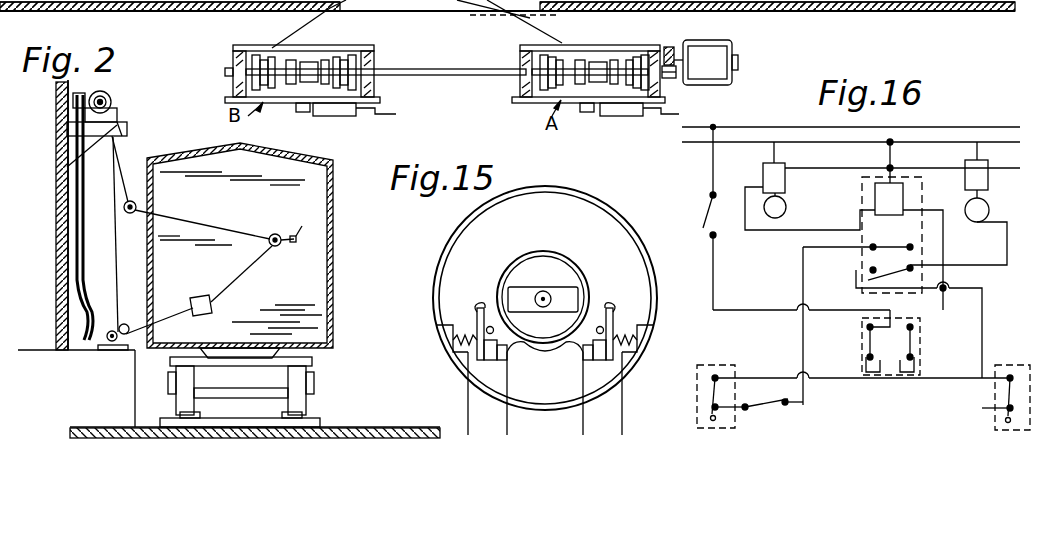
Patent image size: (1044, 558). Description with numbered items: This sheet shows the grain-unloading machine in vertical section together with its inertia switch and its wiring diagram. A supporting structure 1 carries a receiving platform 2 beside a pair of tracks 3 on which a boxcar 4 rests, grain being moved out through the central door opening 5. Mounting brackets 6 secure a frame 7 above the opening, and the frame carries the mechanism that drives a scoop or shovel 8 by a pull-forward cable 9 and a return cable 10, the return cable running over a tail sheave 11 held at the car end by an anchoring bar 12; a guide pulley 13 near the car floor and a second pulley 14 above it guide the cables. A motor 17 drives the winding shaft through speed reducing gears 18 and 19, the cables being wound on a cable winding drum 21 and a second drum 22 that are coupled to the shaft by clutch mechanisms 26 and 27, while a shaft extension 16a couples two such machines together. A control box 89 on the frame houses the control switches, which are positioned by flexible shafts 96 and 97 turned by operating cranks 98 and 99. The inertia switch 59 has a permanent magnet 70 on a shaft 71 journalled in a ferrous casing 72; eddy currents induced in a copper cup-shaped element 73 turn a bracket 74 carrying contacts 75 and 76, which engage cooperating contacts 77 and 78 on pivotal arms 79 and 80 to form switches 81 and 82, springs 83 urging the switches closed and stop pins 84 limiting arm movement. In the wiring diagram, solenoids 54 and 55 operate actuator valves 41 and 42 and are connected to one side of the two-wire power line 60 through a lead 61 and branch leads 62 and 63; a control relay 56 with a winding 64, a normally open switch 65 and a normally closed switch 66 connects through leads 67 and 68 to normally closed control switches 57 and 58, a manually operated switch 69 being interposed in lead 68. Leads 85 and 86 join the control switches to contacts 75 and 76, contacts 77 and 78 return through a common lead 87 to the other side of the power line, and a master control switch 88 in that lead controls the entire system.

In FIG. 2, the supporting structure 1 is at (62, 203).
In FIG. 2, the receiving platform 2 is at (727, 12).
In FIG. 2, the tracks 3 is at (198, 418).
In FIG. 2, the boxcar 4 is at (336, 290).
In FIG. 2, the opening 5 is at (154, 268).
In FIG. 2, the mounting bracket 6 is at (67, 137).
In FIG. 2, the frame 7 is at (120, 118).
In FIG. 2, the scoop or shovel 8 is at (212, 308).
In FIG. 2, the pull-forward cable 9 is at (114, 247).
In FIG. 2, the return cable 10 is at (210, 236).
In FIG. 2, the tail sheave 11 is at (275, 234).
In FIG. 2, the anchoring bar 12 is at (296, 238).
In FIG. 2, the guide pulley 13 is at (148, 320).
In FIG. 2, the second pulley 14 is at (138, 206).
In FIG. 2, the shaft extension 16a is at (438, 76).
In FIG. 2, the motor 17 is at (732, 50).
In FIG. 2, the speed reducing gear 18 is at (668, 47).
In FIG. 2, the speed reducing gear 19 is at (673, 78).
In FIG. 2, the cable winding drum 21 is at (280, 56).
In FIG. 2, the second drum 22 is at (306, 60).
In FIG. 2, the clutch mechanism 26 is at (264, 50).
In FIG. 2, the clutch mechanism 27 is at (113, 97).
In FIG. 2, the control box 89 is at (73, 99).
In FIG. 2, the flexible shaft 96 is at (68, 234).
In FIG. 2, the flexible shaft 97 is at (70, 256).
In FIG. 2, the operating crank 98 is at (74, 292).
In FIG. 2, the operating crank 99 is at (68, 318).
In FIG. 16, the operating crank 99 is at (835, 143).
In FIG. 15, the magnetically operated inertia switch 59 is at (640, 190).
In FIG. 16, the magnetically operated inertia switch 59 is at (866, 328).
In FIG. 15, the casing 72 is at (470, 210).
In FIG. 15, the cup-shaped element 73 is at (536, 255).
In FIG. 15, the permanent magnet 70 is at (515, 288).
In FIG. 15, the shaft 71 is at (550, 288).
In FIG. 15, the stop pins 84 is at (489, 326).
In FIG. 15, the pivotal arm 80 is at (478, 325).
In FIG. 15, the pivotal arm 79 is at (612, 325).
In FIG. 15, the springs 83 is at (452, 346).
In FIG. 15, the switch 82 is at (476, 366).
In FIG. 16, the switch 82 is at (866, 350).
In FIG. 15, the switch 81 is at (614, 366).
In FIG. 16, the switch 81 is at (916, 344).
In FIG. 15, the switch contact 76 is at (490, 360).
In FIG. 16, the switch contact 76 is at (868, 360).
In FIG. 15, the switch contact 75 is at (598, 360).
In FIG. 16, the switch contact 75 is at (914, 362).
In FIG. 15, the bracket 74 is at (523, 355).
In FIG. 15, the lead 85 is at (576, 392).
In FIG. 16, the lead 85 is at (946, 380).
In FIG. 15, the common lead 87 is at (466, 410).
In FIG. 16, the common lead 87 is at (712, 165).
In FIG. 15, the cooperating contact 78 is at (486, 395).
In FIG. 16, the cooperating contact 78 is at (866, 338).
In FIG. 15, the cooperating contact 77 is at (600, 395).
In FIG. 16, the cooperating contact 77 is at (914, 329).
In FIG. 15, the lead 86 is at (509, 424).
In FIG. 16, the lead 86 is at (828, 380).
In FIG. 16, the two-wire power line 60 is at (800, 128).
In FIG. 16, the master control switch 88 is at (706, 222).
In FIG. 16, the solenoid 55 is at (763, 166).
In FIG. 16, the branch lead 63 is at (826, 170).
In FIG. 16, the actuator valve 42 is at (786, 208).
In FIG. 16, the control relay 56 is at (870, 204).
In FIG. 16, the winding 64 is at (875, 212).
In FIG. 16, the lead 61 is at (891, 152).
In FIG. 16, the branch lead 62 is at (944, 168).
In FIG. 16, the solenoid 54 is at (988, 168).
In FIG. 16, the actuator valve 41 is at (978, 222).
In FIG. 16, the normally closed relay switch 66 is at (870, 251).
In FIG. 16, the normally open relay switch 65 is at (858, 276).
In FIG. 16, the lead 68 is at (802, 284).
In FIG. 16, the lead 67 is at (982, 306).
In FIG. 16, the control switch 58 is at (716, 364).
In FIG. 16, the manually operated switch 69 is at (778, 410).
In FIG. 16, the control switch 57 is at (1012, 362).